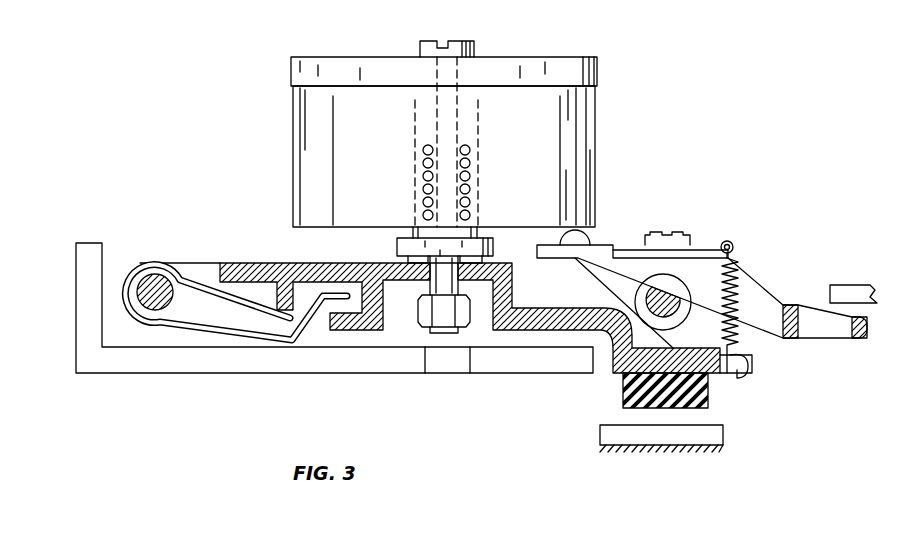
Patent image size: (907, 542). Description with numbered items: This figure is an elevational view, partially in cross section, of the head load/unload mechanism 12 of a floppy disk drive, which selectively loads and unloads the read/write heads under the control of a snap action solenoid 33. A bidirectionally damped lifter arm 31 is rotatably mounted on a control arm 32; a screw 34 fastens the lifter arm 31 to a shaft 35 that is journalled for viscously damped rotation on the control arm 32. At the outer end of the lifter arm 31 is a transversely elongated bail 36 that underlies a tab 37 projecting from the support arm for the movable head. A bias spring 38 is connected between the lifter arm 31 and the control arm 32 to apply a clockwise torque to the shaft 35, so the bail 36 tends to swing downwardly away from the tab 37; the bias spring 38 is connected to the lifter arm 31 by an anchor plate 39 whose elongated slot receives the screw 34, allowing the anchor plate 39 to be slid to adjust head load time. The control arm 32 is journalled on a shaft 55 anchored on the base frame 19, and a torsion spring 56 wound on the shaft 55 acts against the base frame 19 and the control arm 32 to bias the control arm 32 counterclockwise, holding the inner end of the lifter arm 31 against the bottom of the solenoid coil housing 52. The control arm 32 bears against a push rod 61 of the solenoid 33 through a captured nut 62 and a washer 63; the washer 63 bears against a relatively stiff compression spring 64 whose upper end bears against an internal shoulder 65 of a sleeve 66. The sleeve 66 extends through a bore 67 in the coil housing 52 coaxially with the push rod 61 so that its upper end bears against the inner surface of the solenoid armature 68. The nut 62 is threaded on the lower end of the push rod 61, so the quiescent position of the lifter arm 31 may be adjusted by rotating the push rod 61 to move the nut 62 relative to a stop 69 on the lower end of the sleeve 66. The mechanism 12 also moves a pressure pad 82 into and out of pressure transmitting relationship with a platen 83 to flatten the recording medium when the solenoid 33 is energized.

The head load/unload mechanism 12 is at (630, 107).
The base frame 19 is at (182, 365).
The lifter arm 31 is at (756, 280).
The control arm 32 is at (262, 265).
The snap action solenoid 33 is at (295, 148).
The screw 34 is at (678, 232).
The shaft 35 is at (672, 292).
The bail 36 is at (867, 330).
The tab 37 is at (855, 290).
The bias spring 38 is at (740, 332).
The anchor plate 39 is at (720, 244).
The solenoid coil housing 52 is at (585, 170).
The shaft 55 is at (142, 270).
The torsion spring 56 is at (195, 278).
The push rod 61 is at (445, 335).
The captured nut 62 is at (422, 312).
The washer 63 is at (488, 263).
The compression spring 64 is at (418, 165).
The internal shoulder 65 is at (470, 166).
The sleeve 66 is at (478, 100).
The bore 67 is at (415, 100).
The solenoid armature 68 is at (307, 68).
The stop 69 is at (397, 247).
The pressure pad 82 is at (623, 390).
The platen 83 is at (723, 432).